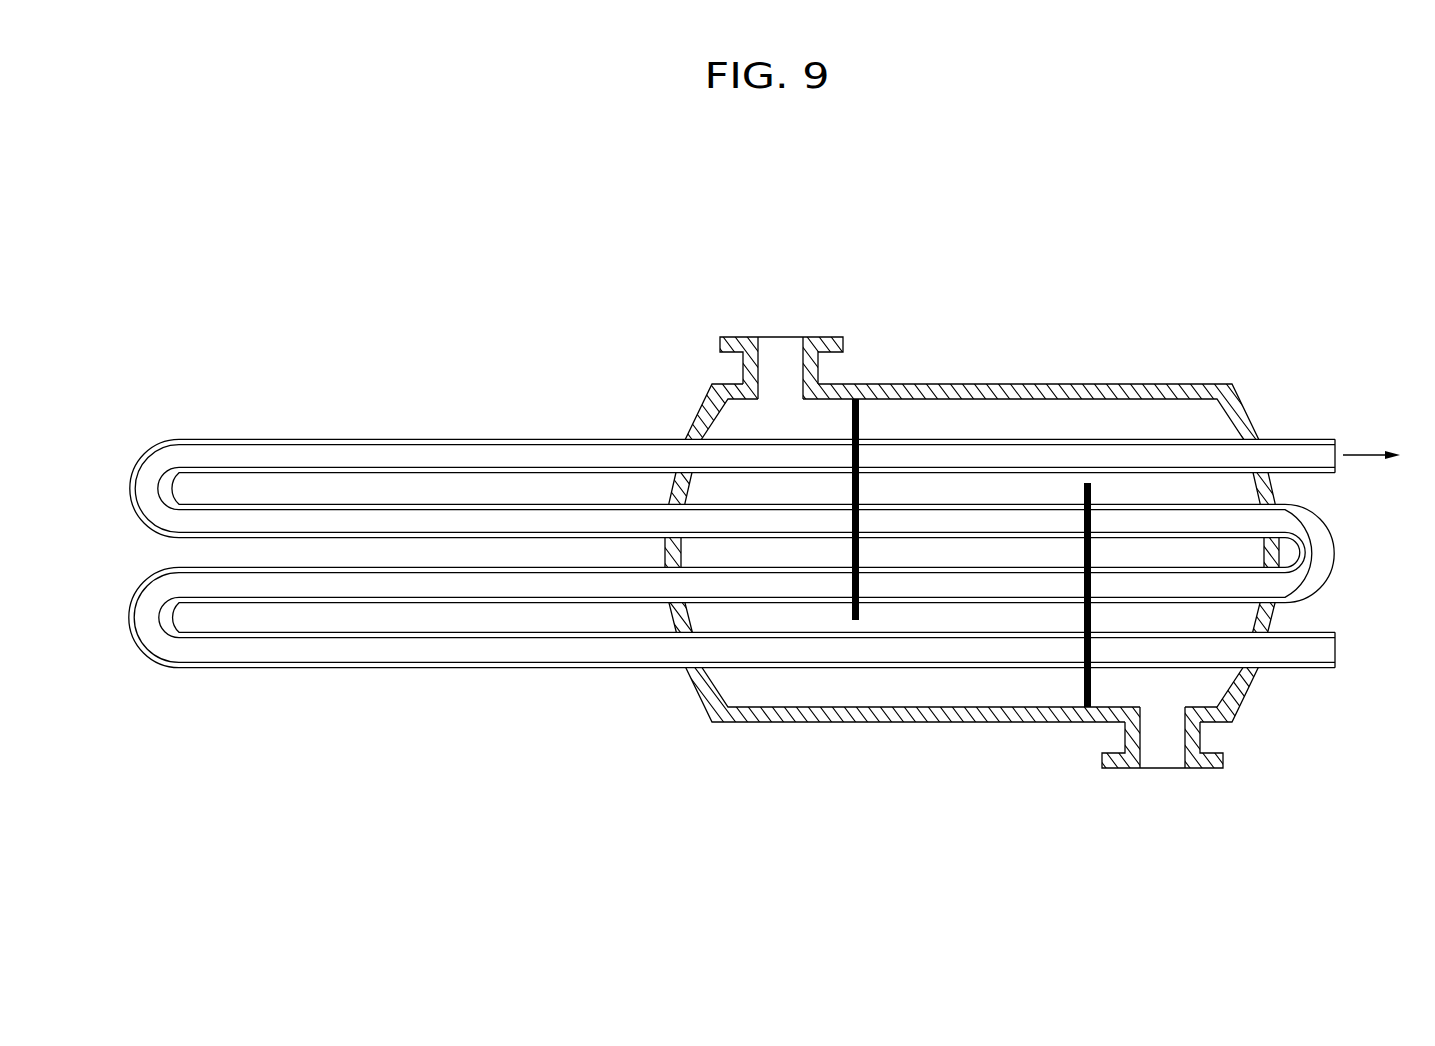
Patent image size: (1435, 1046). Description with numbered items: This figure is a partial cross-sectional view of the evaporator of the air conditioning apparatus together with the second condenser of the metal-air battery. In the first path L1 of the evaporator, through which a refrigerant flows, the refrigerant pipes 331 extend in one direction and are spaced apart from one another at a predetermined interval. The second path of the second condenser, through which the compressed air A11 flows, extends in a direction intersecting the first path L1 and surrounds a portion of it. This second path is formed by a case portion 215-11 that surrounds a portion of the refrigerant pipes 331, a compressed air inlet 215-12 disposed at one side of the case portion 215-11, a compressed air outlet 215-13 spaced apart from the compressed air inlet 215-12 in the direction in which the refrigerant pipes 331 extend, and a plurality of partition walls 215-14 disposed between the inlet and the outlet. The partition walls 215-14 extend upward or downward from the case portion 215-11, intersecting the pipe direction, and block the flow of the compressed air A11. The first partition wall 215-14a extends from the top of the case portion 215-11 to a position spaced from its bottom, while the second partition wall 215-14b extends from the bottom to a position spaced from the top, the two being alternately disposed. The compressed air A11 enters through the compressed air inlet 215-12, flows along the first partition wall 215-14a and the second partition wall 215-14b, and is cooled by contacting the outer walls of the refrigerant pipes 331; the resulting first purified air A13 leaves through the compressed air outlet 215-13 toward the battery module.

The case portion 215-11 is at (1123, 384).
The compressed air inlet 215-12 is at (743, 368).
The compressed air outlet 215-13 is at (1200, 738).
The partition walls 215-14 is at (971, 472).
The first partition wall 215-14a is at (858, 490).
The second partition wall 215-14b is at (1084, 557).
The refrigerant pipes 331 is at (1297, 438).
The compressed air A11 is at (781, 315).
The first purified air A13 is at (1162, 777).
The first path L1 is at (1357, 650).